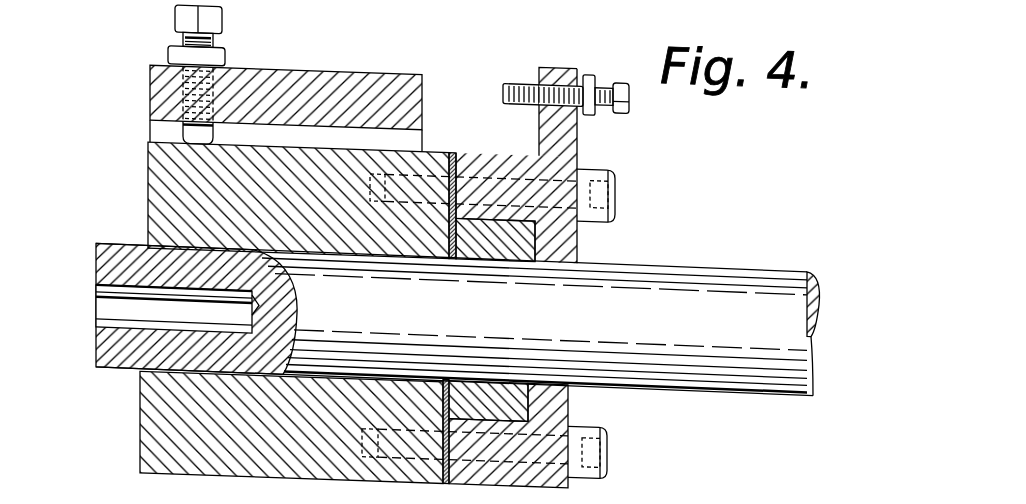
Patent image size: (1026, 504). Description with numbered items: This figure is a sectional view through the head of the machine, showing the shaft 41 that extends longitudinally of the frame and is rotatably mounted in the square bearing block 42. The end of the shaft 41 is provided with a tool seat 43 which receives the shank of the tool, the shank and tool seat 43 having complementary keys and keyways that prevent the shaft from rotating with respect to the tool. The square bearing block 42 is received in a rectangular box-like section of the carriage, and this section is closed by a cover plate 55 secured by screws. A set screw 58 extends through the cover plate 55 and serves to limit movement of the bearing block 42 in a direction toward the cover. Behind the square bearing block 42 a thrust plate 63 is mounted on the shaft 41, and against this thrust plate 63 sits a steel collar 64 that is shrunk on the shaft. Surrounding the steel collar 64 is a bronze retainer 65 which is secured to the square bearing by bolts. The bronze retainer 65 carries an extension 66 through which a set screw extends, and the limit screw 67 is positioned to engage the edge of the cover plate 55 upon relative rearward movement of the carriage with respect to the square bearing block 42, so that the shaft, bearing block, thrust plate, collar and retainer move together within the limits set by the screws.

The shaft 41 is at (458, 319).
The square bearing block 42 is at (158, 432).
The tool seat 43 is at (117, 300).
The cover plate 55 is at (367, 72).
The set screw 58 is at (214, 17).
The thrust plate 63 is at (452, 137).
The steel collar 64 is at (520, 388).
The bronze retainer 65 is at (578, 230).
The extension 66 is at (557, 48).
The limit screw 67 is at (622, 87).